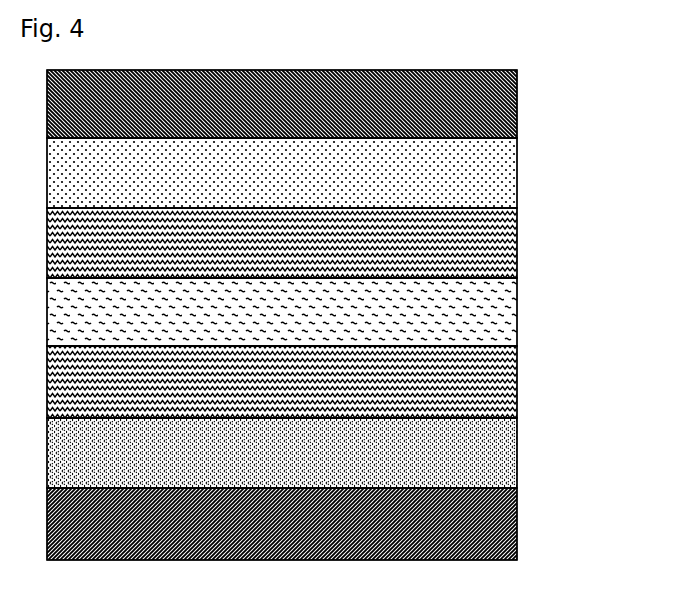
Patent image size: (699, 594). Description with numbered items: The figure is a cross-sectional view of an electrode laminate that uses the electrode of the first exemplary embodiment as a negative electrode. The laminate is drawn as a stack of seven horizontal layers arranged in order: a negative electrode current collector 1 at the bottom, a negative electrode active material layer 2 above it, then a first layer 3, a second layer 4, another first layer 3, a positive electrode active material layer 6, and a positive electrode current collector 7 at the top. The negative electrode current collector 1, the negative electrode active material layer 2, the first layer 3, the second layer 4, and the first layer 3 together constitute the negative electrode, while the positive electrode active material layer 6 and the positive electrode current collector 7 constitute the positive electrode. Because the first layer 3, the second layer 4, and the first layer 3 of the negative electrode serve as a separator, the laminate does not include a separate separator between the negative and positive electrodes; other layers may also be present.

The negative electrode current collector 1 is at (510, 517).
The negative electrode active material layer 2 is at (497, 462).
The first layer 3 is at (517, 240).
The second layer 4 is at (497, 322).
The positive electrode active material layer 6 is at (497, 180).
The positive electrode current collector 7 is at (517, 93).